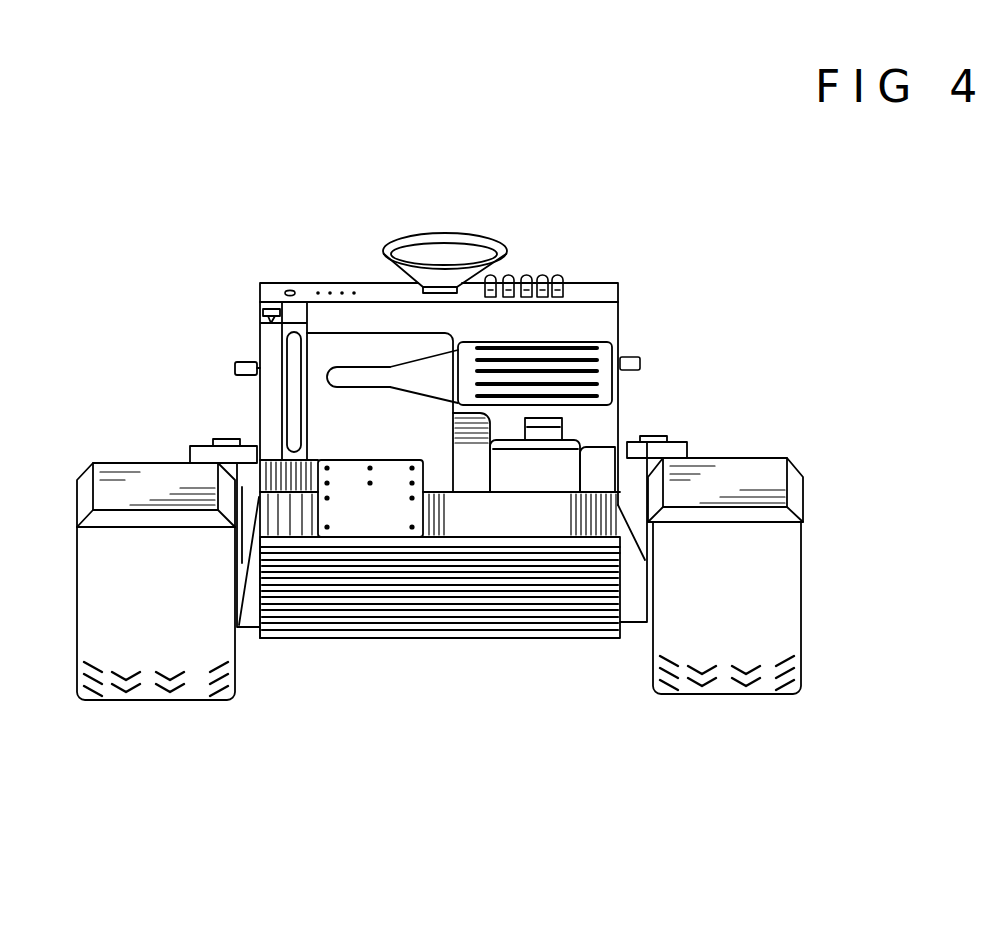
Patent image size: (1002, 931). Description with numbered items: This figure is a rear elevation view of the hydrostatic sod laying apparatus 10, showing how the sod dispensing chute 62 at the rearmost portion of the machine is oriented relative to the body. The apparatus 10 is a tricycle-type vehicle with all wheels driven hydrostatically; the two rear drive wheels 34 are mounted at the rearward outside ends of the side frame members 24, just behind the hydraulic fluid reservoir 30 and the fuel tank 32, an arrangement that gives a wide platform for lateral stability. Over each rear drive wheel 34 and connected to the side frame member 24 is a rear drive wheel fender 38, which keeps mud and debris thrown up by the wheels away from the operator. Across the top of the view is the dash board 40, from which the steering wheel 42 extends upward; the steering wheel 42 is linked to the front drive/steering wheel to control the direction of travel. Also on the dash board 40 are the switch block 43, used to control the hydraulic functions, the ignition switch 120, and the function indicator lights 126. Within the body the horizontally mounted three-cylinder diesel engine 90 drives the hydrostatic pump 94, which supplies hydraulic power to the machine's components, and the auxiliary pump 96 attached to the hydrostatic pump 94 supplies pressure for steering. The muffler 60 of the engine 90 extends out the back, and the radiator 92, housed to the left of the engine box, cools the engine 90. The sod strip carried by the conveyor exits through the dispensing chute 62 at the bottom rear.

The hydrostatic sod laying apparatus 10 is at (277, 198).
The side frame member 24 is at (247, 580).
The hydraulic fluid reservoir 30 is at (690, 436).
The fuel tank 32 is at (197, 437).
The rear drive wheel 34 is at (72, 492).
The rear drive wheel fender 38 is at (122, 455).
The dash board 40 is at (352, 273).
The steering wheel 42 is at (463, 227).
The switch block 43 is at (535, 263).
The muffler 60 is at (568, 338).
The dispensing chute 62 is at (487, 580).
The engine 90 is at (347, 357).
The radiator 92 is at (250, 347).
The hydrostatic pump 94 is at (538, 472).
The auxiliary pump 96 is at (568, 424).
The ignition switch 120 is at (283, 287).
The function indicator lights 126 is at (335, 287).